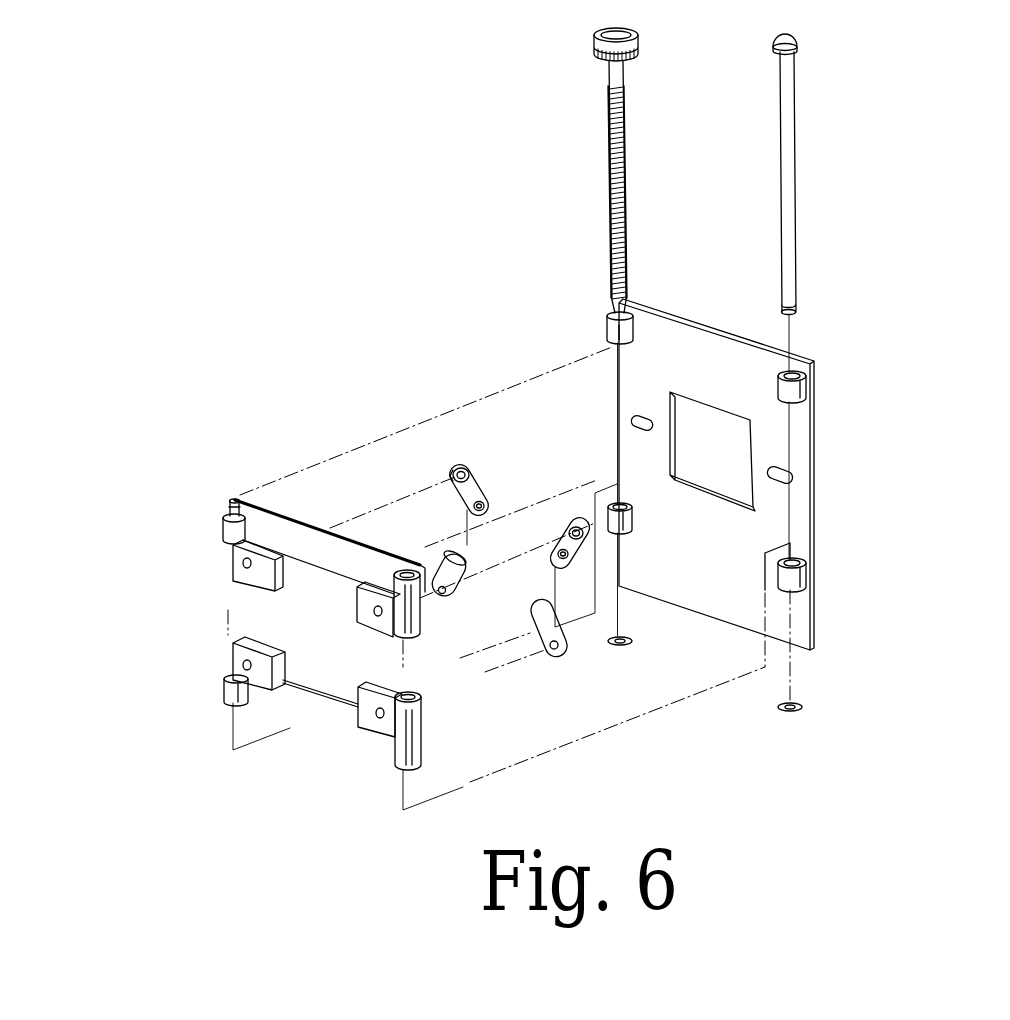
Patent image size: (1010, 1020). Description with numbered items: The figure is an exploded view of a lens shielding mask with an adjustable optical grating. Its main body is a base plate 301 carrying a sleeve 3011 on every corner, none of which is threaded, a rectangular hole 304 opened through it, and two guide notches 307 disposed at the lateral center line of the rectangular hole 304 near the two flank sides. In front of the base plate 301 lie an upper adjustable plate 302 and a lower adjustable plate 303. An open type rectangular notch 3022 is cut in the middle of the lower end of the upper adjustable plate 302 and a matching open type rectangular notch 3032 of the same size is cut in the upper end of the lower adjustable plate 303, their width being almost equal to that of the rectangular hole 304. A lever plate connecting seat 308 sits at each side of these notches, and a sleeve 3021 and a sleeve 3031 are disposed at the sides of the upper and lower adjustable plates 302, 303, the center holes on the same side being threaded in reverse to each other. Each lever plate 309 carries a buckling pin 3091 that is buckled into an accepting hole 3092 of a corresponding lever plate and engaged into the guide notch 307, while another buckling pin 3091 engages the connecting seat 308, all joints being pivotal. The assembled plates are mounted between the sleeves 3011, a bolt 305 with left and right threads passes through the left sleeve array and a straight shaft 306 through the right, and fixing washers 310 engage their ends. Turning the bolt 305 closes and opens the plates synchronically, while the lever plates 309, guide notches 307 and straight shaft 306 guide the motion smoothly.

The base plate 301 is at (775, 523).
The sleeve 3011 is at (793, 390).
The upper adjustable plate 302 is at (299, 578).
The sleeve 3021 is at (234, 516).
The open type rectangular notch 3022 is at (305, 573).
The lower adjustable plate 303 is at (328, 715).
The sleeve 3031 is at (232, 682).
The open type rectangular notch 3032 is at (328, 673).
The rectangular hole 304 is at (727, 457).
The bolt 305 is at (608, 140).
The straight shaft 306 is at (787, 210).
The guide notch 307 is at (637, 422).
The lever plate connecting seat 308 is at (373, 602).
The lever plate 309 is at (483, 472).
The buckling pin 3091 is at (455, 473).
The accepting hole 3092 is at (477, 507).
The retaining washer 310 is at (627, 642).